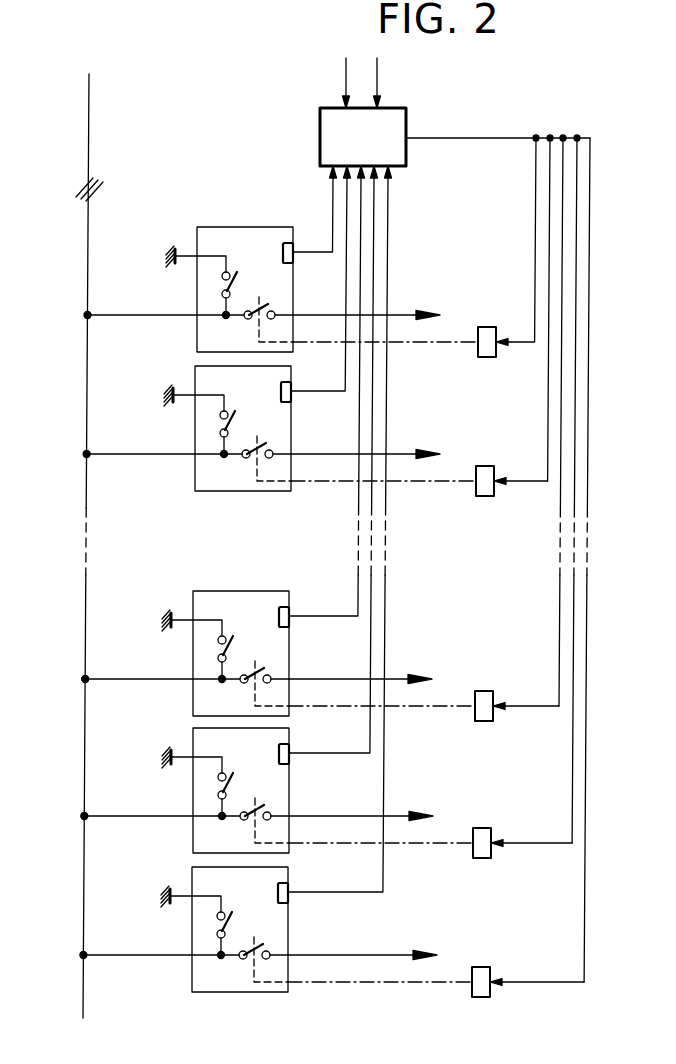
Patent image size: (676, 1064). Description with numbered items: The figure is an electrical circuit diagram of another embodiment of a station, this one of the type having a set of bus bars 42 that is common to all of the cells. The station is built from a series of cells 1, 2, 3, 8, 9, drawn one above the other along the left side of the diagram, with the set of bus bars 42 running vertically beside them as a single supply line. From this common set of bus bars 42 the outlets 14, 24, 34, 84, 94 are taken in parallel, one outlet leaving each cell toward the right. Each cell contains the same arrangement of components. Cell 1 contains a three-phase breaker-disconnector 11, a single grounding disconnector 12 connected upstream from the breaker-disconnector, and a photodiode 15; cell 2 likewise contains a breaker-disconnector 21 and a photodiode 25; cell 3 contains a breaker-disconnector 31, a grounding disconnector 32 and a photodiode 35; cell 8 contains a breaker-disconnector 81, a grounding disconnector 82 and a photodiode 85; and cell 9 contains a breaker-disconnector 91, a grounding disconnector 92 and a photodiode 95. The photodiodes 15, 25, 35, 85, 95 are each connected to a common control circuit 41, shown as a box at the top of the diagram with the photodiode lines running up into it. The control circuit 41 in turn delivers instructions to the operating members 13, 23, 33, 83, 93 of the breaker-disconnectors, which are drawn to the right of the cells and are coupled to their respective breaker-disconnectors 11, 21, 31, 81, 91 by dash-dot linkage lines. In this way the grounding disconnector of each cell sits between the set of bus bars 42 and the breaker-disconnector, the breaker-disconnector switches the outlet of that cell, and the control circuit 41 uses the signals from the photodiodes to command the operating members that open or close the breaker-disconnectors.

The control circuit 41 is at (338, 129).
The set of bus bars 42 is at (88, 258).
The cell 1 is at (203, 926).
The three-phase breaker-disconnector 11 is at (256, 941).
The grounding disconnector 12 is at (218, 926).
The operating member 13 is at (482, 990).
The outlet 14 is at (392, 956).
The photodiode 15 is at (283, 891).
The cell 2 is at (207, 787).
The three-phase breaker-disconnector 21 is at (220, 786).
The operating member 23 is at (483, 852).
The outlet 24 is at (400, 815).
The photodiode 25 is at (287, 752).
The cell 3 is at (208, 642).
The three-phase breaker-disconnector 31 is at (256, 663).
The grounding disconnector 32 is at (219, 650).
The operating member 33 is at (485, 715).
The outlet 34 is at (400, 679).
The photodiode 35 is at (287, 614).
The cell 8 is at (206, 427).
The three-phase breaker-disconnector 81 is at (258, 437).
The grounding disconnector 82 is at (221, 424).
The operating member 83 is at (486, 490).
The outlet 84 is at (402, 453).
The photodiode 85 is at (287, 391).
The cell 9 is at (206, 277).
The three-phase breaker-disconnector 91 is at (260, 299).
The grounding disconnector 92 is at (221, 286).
The operating member 93 is at (488, 350).
The outlet 94 is at (404, 315).
The photodiode 95 is at (289, 249).